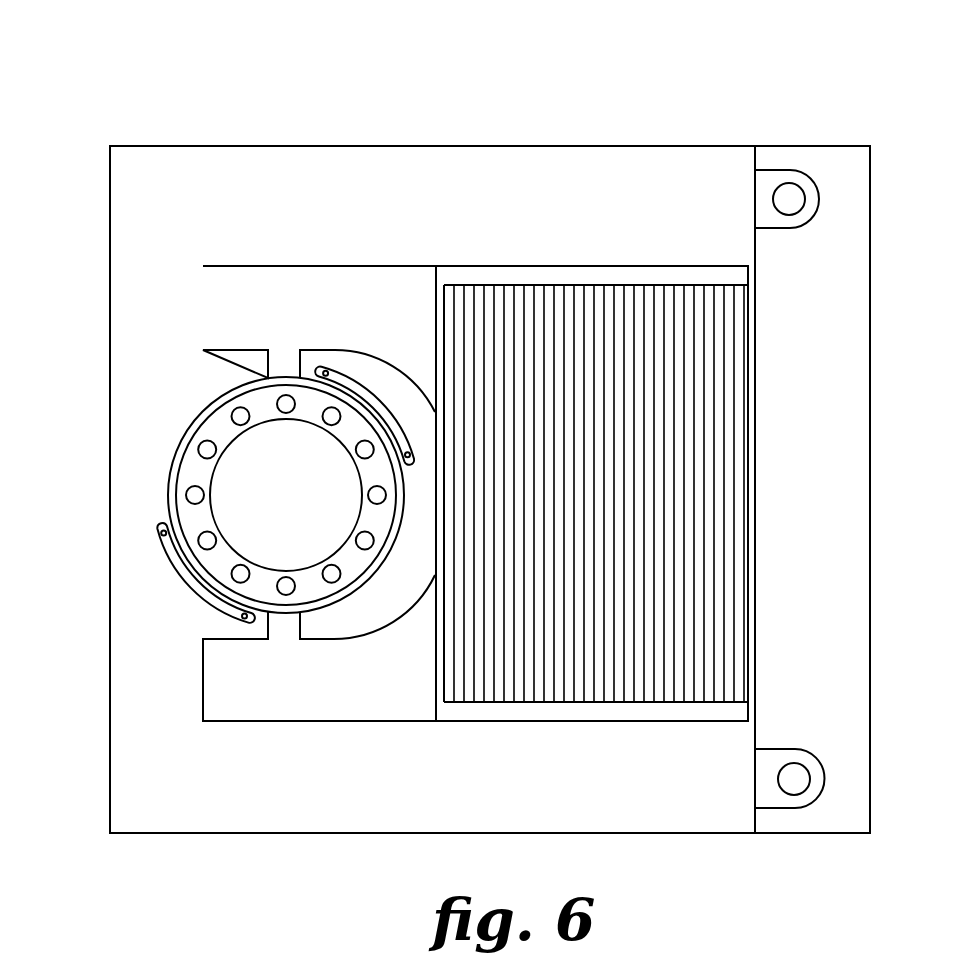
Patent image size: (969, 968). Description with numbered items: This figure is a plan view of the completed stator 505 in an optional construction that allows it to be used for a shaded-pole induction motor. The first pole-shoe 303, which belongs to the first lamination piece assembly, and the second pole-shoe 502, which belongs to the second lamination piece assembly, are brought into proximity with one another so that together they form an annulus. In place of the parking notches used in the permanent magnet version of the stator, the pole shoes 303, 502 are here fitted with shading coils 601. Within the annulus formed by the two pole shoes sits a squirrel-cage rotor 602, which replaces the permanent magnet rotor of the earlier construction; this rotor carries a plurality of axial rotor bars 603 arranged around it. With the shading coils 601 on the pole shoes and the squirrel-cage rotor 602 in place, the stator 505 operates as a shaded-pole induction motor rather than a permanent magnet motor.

The completed stator 505 is at (96, 133).
The first pole-shoe 303 is at (398, 548).
The second pole-shoe 502 is at (167, 482).
The squirrel-cage rotor 602 is at (240, 505).
The axial rotor bars 603 is at (238, 410).
The shading coils 601 is at (368, 395).